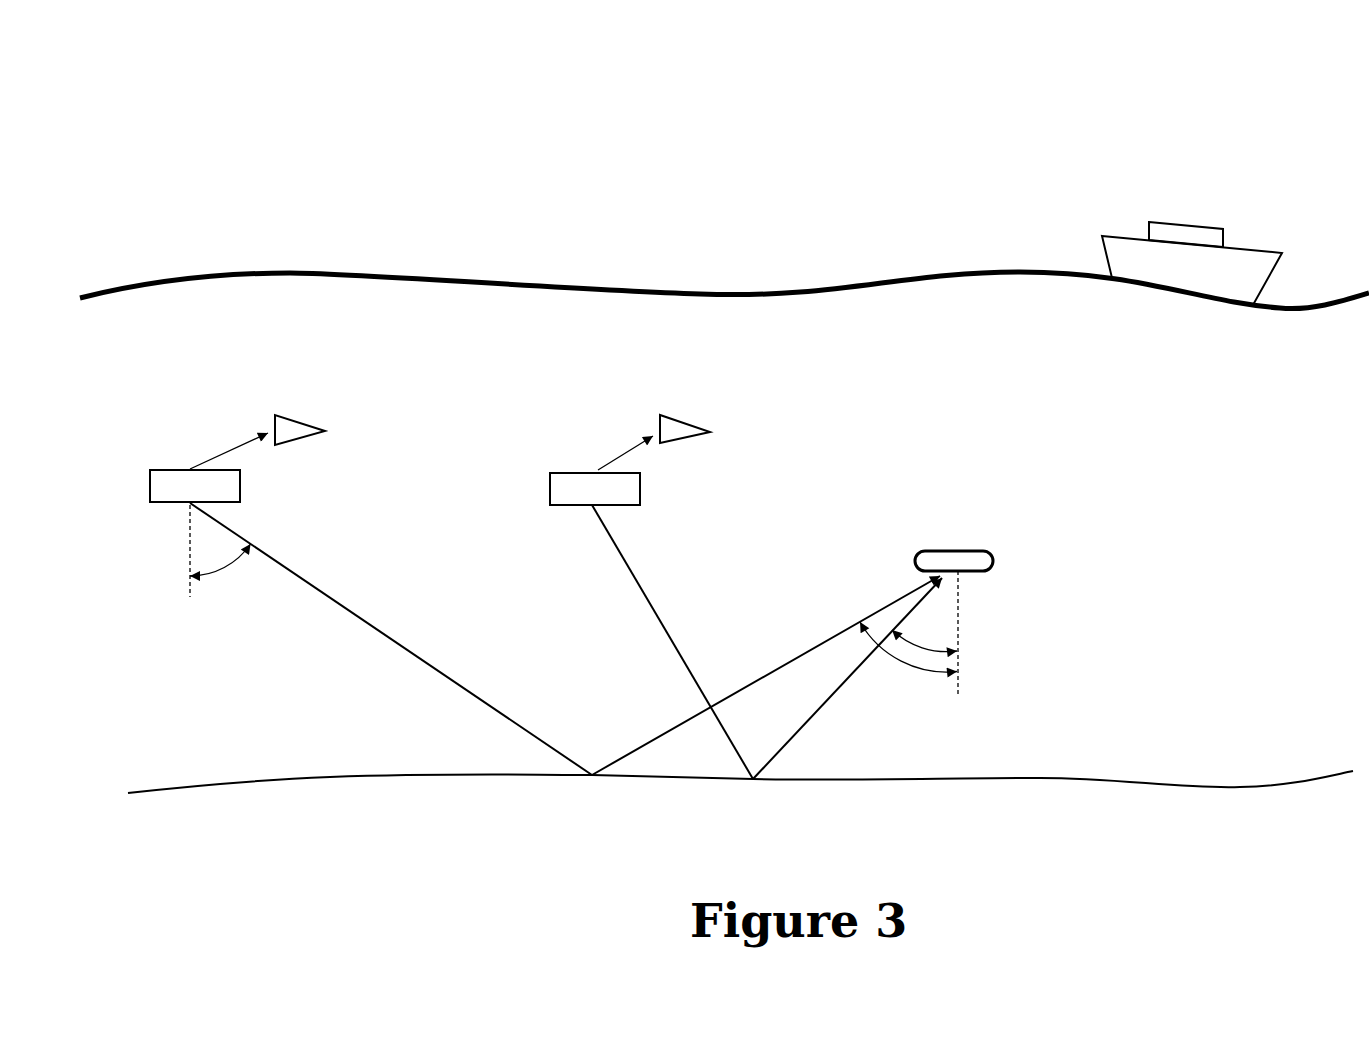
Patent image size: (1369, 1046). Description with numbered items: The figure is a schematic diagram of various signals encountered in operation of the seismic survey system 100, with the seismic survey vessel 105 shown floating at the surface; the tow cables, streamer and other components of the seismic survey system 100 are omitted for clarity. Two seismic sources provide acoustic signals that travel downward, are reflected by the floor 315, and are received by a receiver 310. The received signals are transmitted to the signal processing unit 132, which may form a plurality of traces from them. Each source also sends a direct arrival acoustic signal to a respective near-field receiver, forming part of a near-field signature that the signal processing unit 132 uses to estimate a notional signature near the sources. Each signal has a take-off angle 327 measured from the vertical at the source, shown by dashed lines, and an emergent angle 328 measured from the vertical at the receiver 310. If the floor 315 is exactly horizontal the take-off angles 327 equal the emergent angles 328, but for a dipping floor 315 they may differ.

The seismic survey system 100 is at (940, 105).
The seismic survey vessel 105 is at (1260, 250).
The signal processing unit 132 is at (1190, 223).
The receiver 310 is at (952, 550).
The floor 315 is at (373, 773).
The take-off angle 327 is at (223, 606).
The emergent angle 328 is at (923, 697).